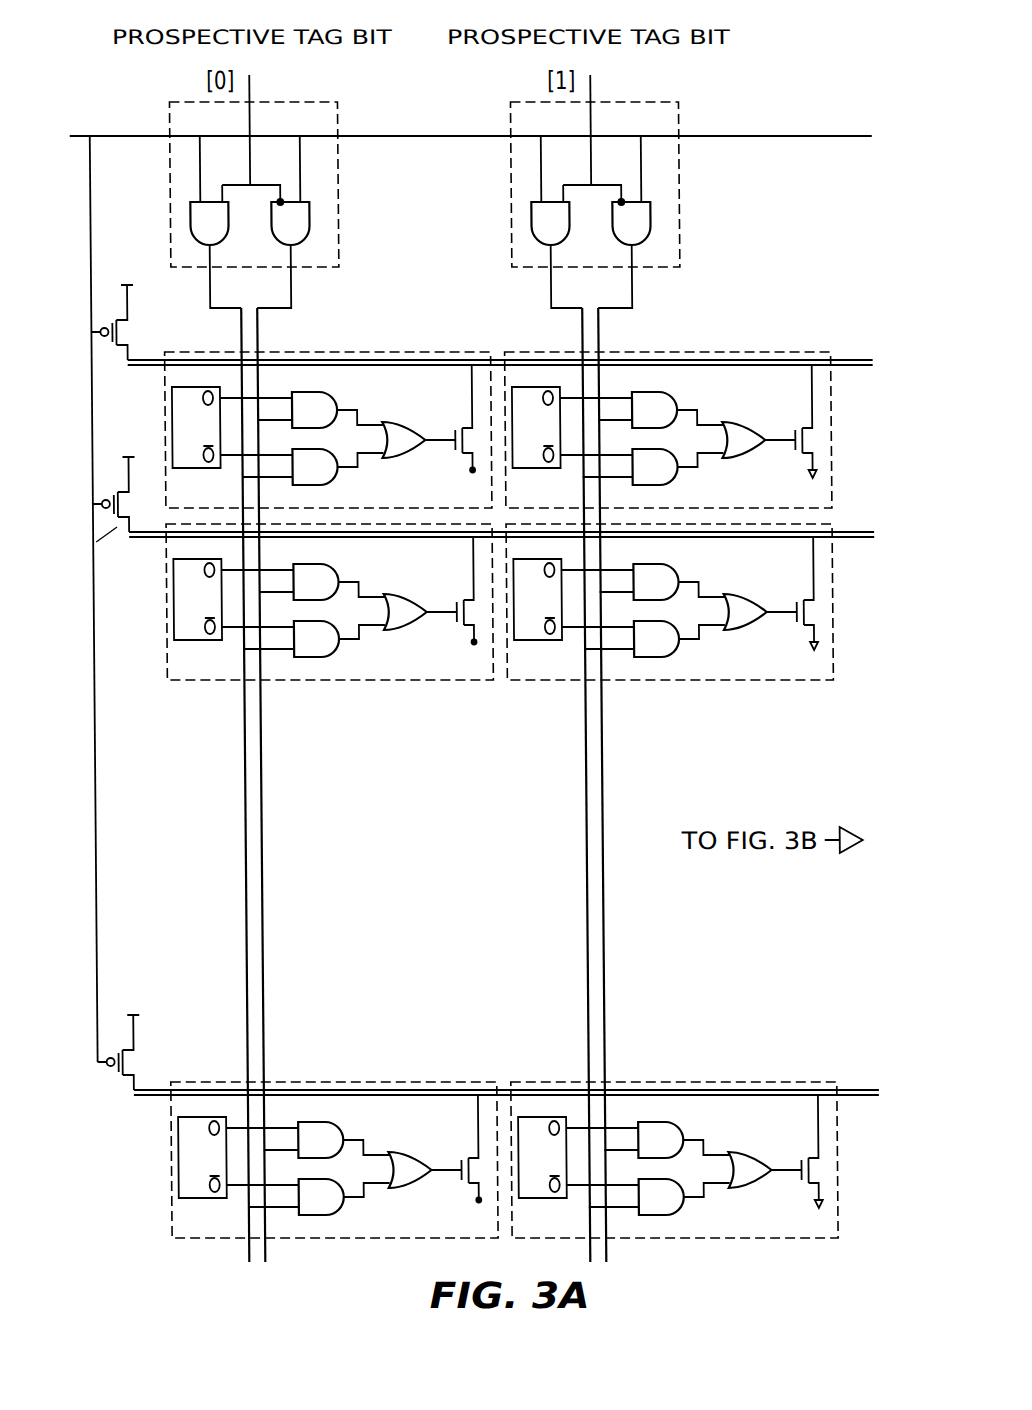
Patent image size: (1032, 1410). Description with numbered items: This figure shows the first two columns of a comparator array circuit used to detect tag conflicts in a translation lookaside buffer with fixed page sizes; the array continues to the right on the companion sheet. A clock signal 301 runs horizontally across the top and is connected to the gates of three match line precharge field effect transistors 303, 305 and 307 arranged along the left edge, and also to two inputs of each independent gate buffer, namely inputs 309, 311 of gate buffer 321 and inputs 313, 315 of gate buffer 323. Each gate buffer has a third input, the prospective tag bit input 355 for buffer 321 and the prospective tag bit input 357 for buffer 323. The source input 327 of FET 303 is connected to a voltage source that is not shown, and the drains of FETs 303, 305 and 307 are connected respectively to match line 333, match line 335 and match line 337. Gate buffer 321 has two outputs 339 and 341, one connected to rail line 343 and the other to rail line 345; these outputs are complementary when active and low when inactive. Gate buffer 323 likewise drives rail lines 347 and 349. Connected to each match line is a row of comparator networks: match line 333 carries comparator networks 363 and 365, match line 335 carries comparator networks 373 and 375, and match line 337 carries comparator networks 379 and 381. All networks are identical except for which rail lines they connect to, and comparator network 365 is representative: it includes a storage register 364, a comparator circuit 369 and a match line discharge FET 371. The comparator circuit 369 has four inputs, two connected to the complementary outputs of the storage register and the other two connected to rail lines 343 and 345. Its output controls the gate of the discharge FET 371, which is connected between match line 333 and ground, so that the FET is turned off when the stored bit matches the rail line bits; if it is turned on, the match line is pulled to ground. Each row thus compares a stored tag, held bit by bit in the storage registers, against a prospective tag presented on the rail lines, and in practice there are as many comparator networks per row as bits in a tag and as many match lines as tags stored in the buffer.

The clock signal 301 is at (100, 96).
The match line precharge field effect transistor 303 is at (84, 328).
The match line precharge field effect transistor 305 is at (84, 502).
The match line precharge field effect transistor 307 is at (94, 1073).
The input 309 is at (200, 176).
The input 311 is at (306, 172).
The input 313 is at (541, 178).
The input 315 is at (646, 160).
The gate buffer 321 is at (342, 236).
The gate buffer 323 is at (683, 218).
The source input 327 is at (134, 303).
The match line 333 is at (140, 358).
The match line 335 is at (145, 541).
The match line 337 is at (134, 1038).
The output 339 is at (211, 259).
The output 341 is at (294, 286).
The rail line 343 is at (239, 778).
The rail line 345 is at (261, 778).
The rail line 347 is at (581, 795).
The rail line 349 is at (601, 780).
The prospective tag bit input 355 is at (260, 88).
The prospective tag bit input 357 is at (600, 90).
The comparator network 363 is at (841, 442).
The storage cell 364 is at (172, 423).
The comparator network 365 is at (295, 430).
The comparator circuit 369 is at (412, 422).
The match line discharge FET 371 is at (450, 462).
The comparator network 373 is at (164, 640).
The comparator network 375 is at (841, 610).
The comparator network 379 is at (164, 1158).
The comparator network 381 is at (834, 1158).